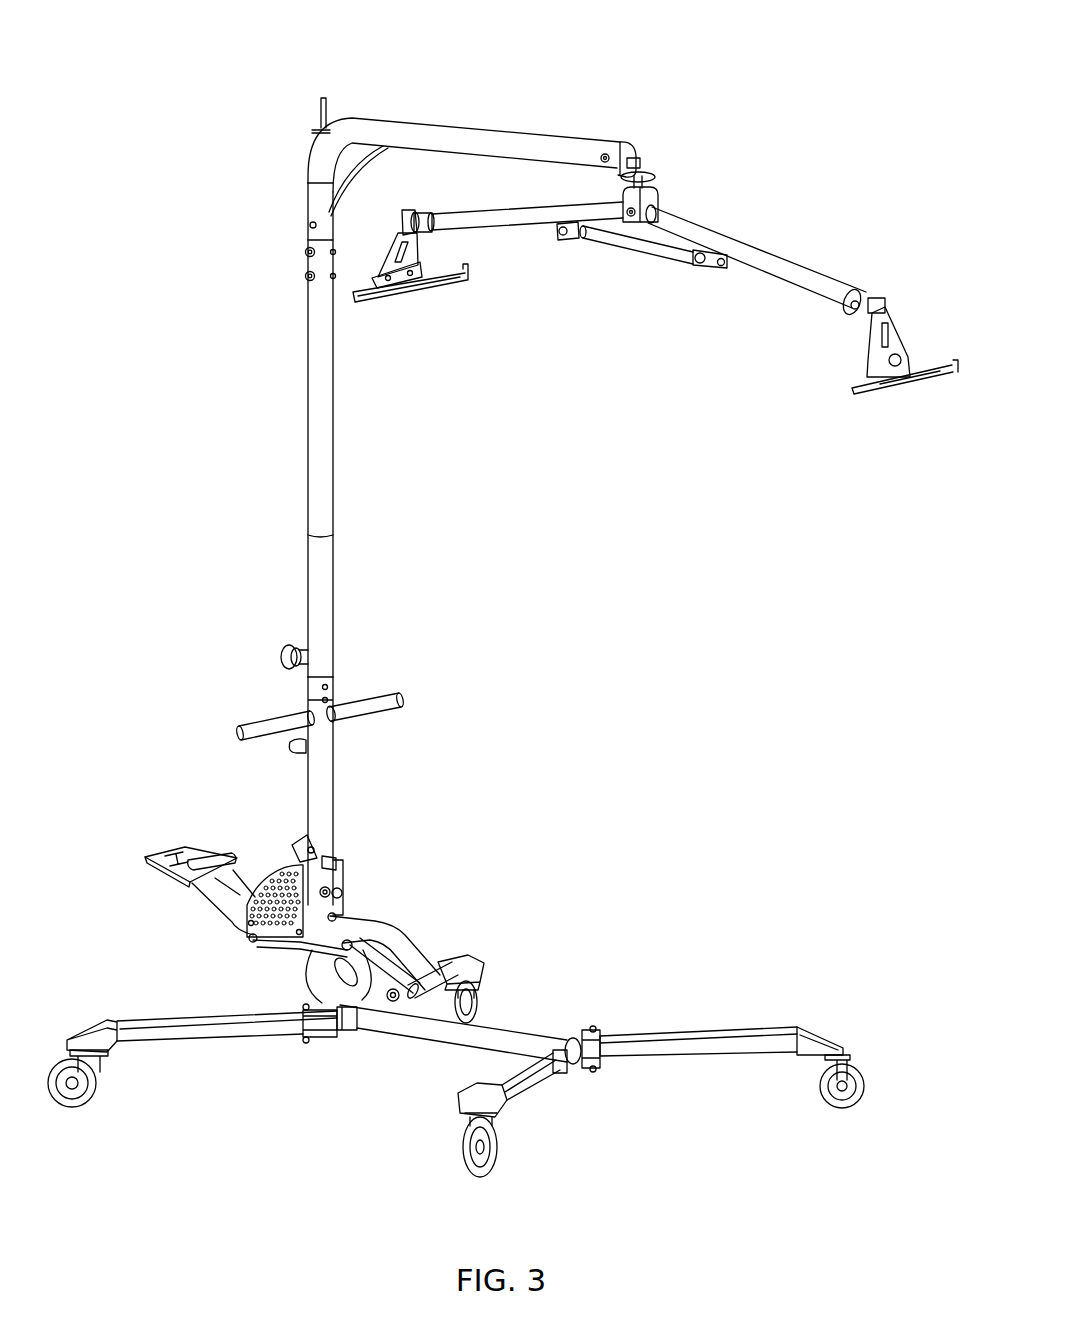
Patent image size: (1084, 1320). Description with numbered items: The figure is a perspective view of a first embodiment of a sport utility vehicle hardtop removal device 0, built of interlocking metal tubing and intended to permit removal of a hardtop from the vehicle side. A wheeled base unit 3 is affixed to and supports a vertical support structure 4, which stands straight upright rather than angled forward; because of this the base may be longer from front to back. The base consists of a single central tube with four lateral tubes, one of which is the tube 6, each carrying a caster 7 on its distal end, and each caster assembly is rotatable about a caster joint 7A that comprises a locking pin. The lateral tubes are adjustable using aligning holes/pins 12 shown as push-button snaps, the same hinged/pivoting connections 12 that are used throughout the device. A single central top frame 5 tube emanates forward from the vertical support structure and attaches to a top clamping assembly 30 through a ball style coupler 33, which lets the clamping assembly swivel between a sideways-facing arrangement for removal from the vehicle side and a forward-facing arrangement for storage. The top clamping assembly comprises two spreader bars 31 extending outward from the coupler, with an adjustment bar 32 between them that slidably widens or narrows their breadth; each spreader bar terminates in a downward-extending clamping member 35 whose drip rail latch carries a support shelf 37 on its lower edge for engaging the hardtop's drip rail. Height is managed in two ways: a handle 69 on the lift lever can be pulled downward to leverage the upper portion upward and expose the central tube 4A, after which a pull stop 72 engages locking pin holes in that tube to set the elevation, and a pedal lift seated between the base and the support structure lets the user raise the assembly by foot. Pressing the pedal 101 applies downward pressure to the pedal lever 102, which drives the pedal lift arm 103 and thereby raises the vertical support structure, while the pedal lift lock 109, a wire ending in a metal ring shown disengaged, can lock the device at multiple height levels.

The hardtop removal device 0 is at (828, 76).
The wheeled base unit 3 is at (393, 1030).
The vertical support structure 4 is at (322, 793).
The central tube 4A is at (322, 558).
The top frame 5 is at (472, 148).
The rear leg 6 is at (680, 1044).
The caster 7 is at (92, 1087).
The caster joint 7A is at (600, 1028).
The hinged/pivoting connections 12 is at (306, 252).
The top clamping assembly 30 is at (785, 240).
The spreader bar 31 is at (497, 220).
The adjustment bar 32 is at (628, 246).
The ball style coupler 33 is at (648, 170).
The clamping member 35 is at (875, 302).
The support shelf 37 is at (870, 390).
The handle 69 is at (240, 733).
The pull stop 72 is at (284, 652).
The pedal 101 is at (158, 857).
The pedal lever 102 is at (405, 960).
The pedal lift arm 103 is at (268, 938).
The pedal lift lock 109 is at (296, 748).